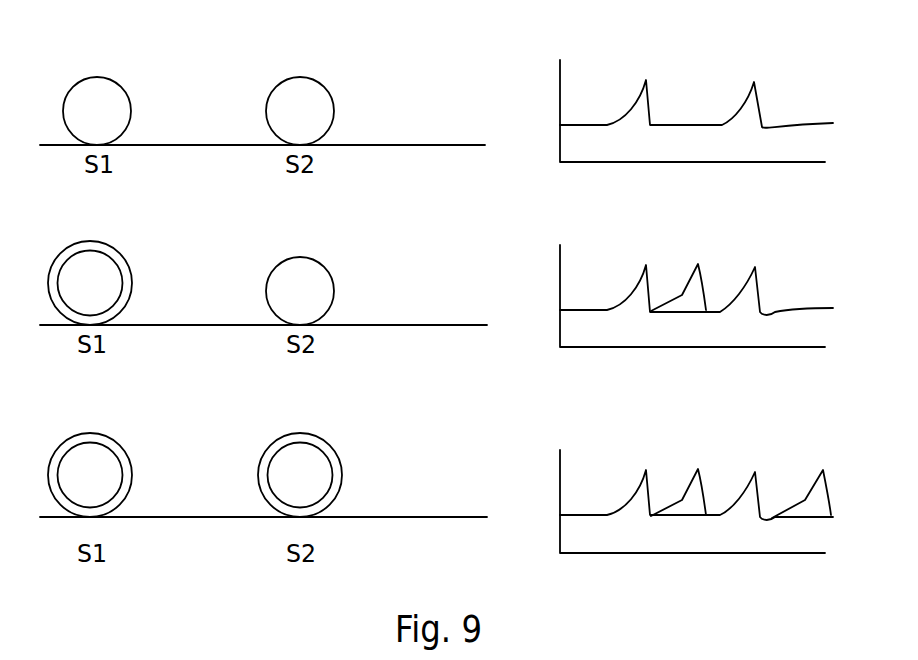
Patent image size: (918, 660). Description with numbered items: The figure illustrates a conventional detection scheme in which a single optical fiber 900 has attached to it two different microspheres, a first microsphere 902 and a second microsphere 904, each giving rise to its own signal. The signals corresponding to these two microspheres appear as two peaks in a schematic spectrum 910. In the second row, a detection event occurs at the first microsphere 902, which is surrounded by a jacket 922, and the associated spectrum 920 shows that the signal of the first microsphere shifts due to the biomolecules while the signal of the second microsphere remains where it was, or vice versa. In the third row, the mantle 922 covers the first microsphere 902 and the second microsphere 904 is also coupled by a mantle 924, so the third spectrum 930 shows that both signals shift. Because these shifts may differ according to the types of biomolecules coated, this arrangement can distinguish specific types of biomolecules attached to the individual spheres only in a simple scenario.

The optical fiber 900 is at (402, 145).
The first microsphere 902 is at (98, 85).
The second microsphere 904 is at (300, 85).
The schematic spectrum 910 is at (534, 45).
The spectrum 920 is at (534, 246).
The jacket 922 is at (60, 253).
The mantle 924 is at (270, 445).
The third spectrum 930 is at (534, 439).